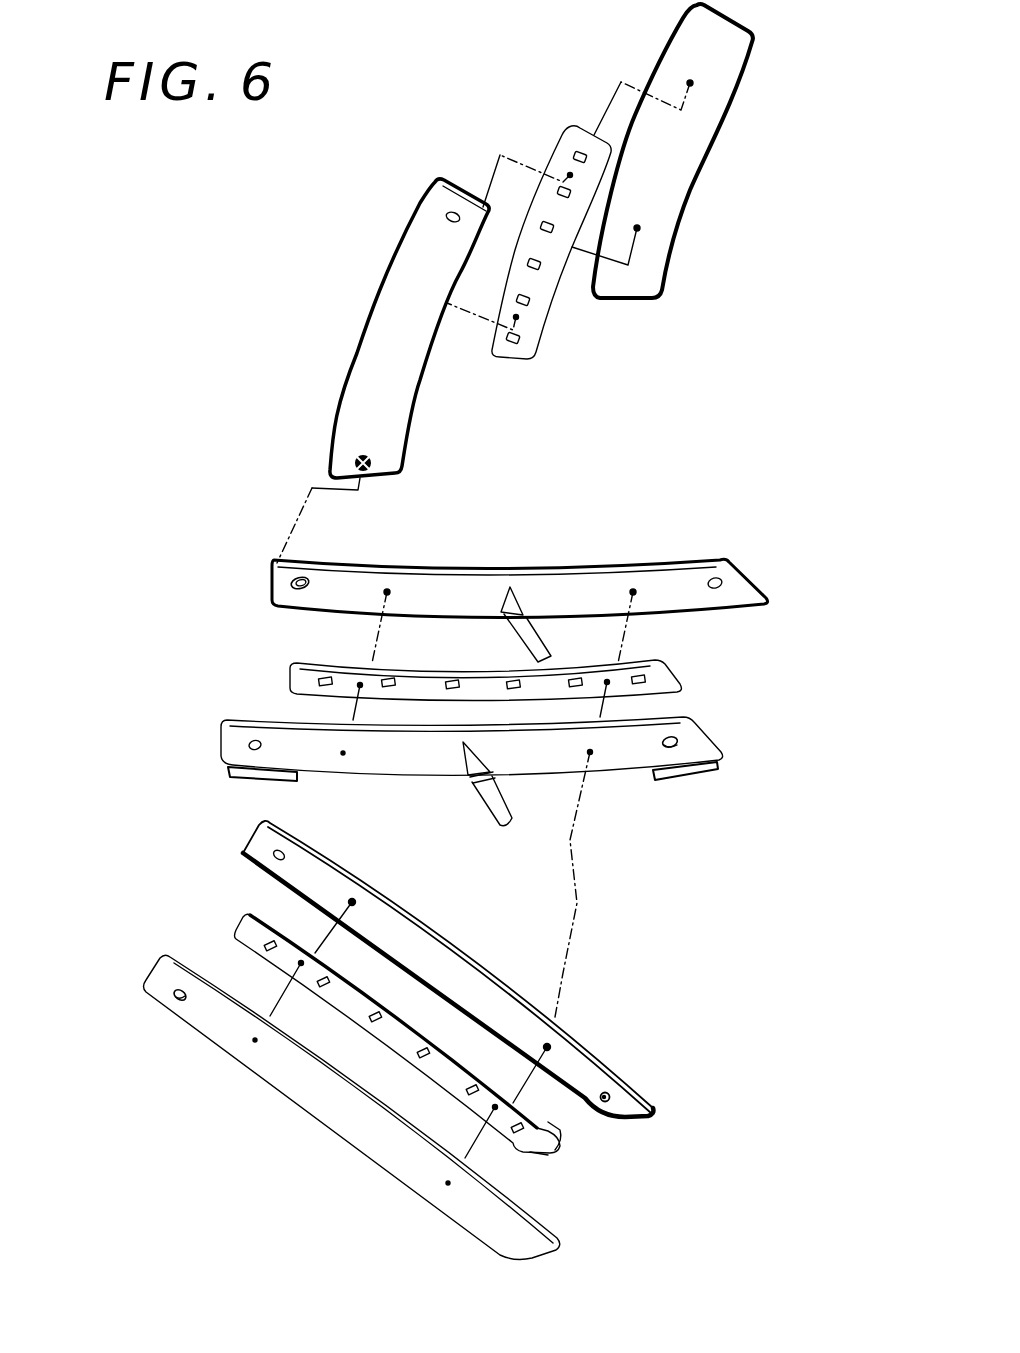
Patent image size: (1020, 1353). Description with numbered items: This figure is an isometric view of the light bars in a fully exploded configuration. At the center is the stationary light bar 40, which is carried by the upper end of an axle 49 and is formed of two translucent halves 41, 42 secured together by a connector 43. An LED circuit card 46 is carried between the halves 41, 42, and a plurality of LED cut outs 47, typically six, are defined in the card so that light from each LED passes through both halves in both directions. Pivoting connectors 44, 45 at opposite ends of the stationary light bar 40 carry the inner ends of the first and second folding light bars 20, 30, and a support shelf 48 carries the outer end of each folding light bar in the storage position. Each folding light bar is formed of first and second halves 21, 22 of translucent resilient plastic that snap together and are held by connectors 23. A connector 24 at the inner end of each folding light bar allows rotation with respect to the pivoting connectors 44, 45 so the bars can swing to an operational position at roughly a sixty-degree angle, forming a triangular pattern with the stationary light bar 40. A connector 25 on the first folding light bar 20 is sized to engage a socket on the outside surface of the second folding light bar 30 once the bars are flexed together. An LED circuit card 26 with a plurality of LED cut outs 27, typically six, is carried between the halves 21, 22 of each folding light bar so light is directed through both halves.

The first folding light bar 20 is at (405, 1040).
The first half 21 is at (507, 980).
The second half 22 is at (312, 1118).
The connector 23 is at (348, 901).
The connector 24 is at (389, 458).
The connector 25 is at (172, 994).
The LED circuit card 26 is at (552, 1160).
The LED cut outs 27 is at (549, 1135).
The second folding light bar 30 is at (718, 198).
The stationary light bar 40 is at (471, 725).
The first half 41 is at (483, 557).
The second half 42 is at (603, 782).
The connector 43 is at (637, 591).
The pivoting connector 44 is at (282, 566).
The pivoting connector 45 is at (675, 717).
The LED circuit card 46 is at (675, 653).
The LED cut outs 47 is at (305, 668).
The support shelf 48 is at (233, 760).
The axle 49 is at (477, 813).